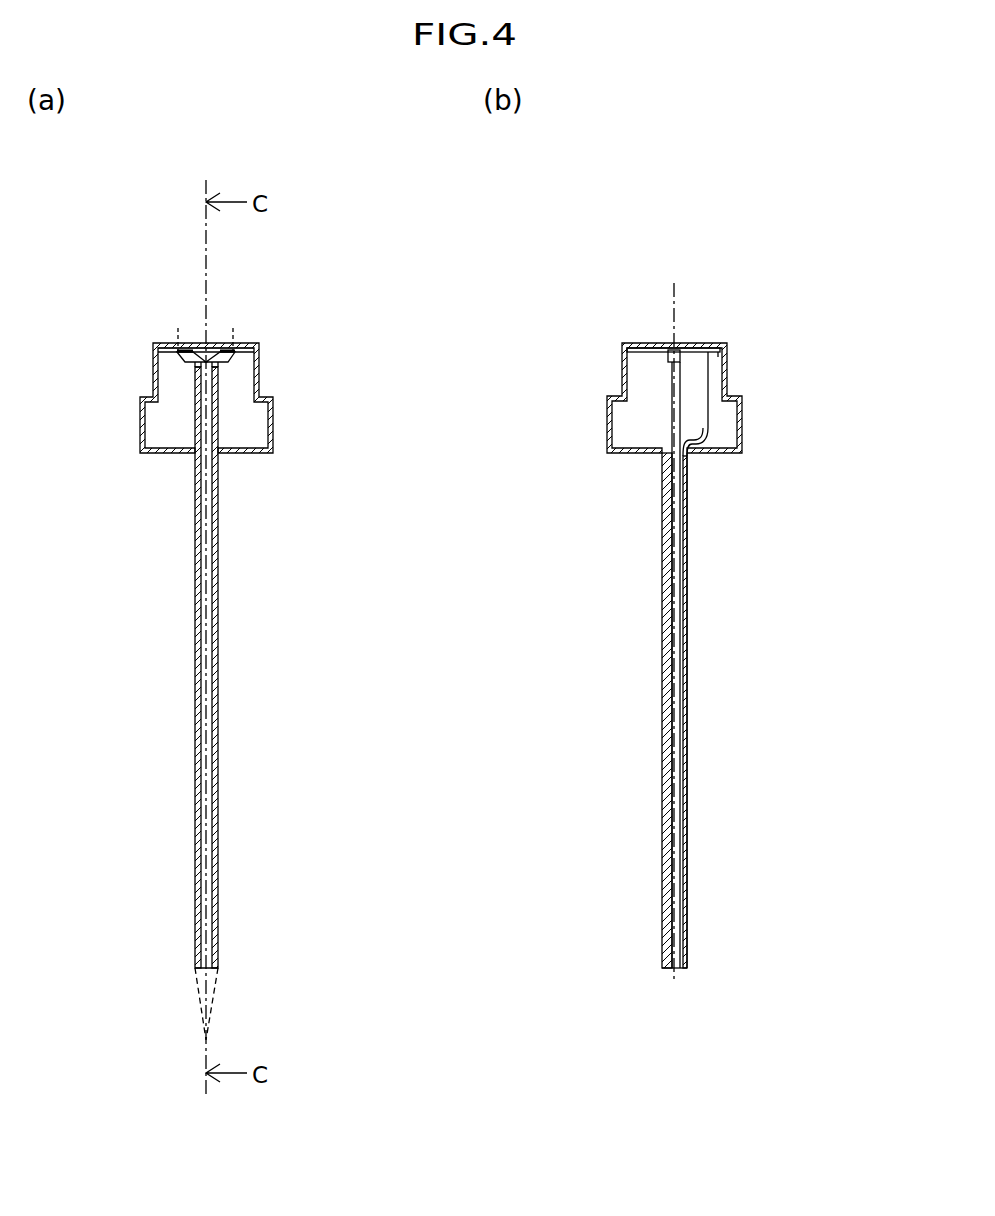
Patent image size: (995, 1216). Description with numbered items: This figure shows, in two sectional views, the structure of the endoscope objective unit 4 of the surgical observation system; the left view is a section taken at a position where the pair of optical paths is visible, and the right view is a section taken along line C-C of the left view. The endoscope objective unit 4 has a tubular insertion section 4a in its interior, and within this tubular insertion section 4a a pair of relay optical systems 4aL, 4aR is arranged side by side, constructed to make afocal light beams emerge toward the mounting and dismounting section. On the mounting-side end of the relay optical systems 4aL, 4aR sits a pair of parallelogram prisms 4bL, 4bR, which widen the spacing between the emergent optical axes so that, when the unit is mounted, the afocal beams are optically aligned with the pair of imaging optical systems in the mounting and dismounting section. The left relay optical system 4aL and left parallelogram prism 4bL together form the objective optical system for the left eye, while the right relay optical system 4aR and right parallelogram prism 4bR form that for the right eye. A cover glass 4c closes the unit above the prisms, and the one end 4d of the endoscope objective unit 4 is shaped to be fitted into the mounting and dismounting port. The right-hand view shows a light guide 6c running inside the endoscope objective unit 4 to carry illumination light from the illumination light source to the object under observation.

The endoscope objective unit 4 is at (175, 285).
The tubular insertion section 4a is at (263, 967).
The relay optical system for the left eye 4aL is at (197, 433).
The relay optical system for the right eye 4aR is at (213, 433).
The parallelogram prism for the left eye 4bL is at (178, 352).
The parallelogram prism for the right eye 4bR is at (218, 352).
The cover glass 4c is at (240, 349).
The one end 4d is at (262, 372).
The light guide 6c is at (708, 390).